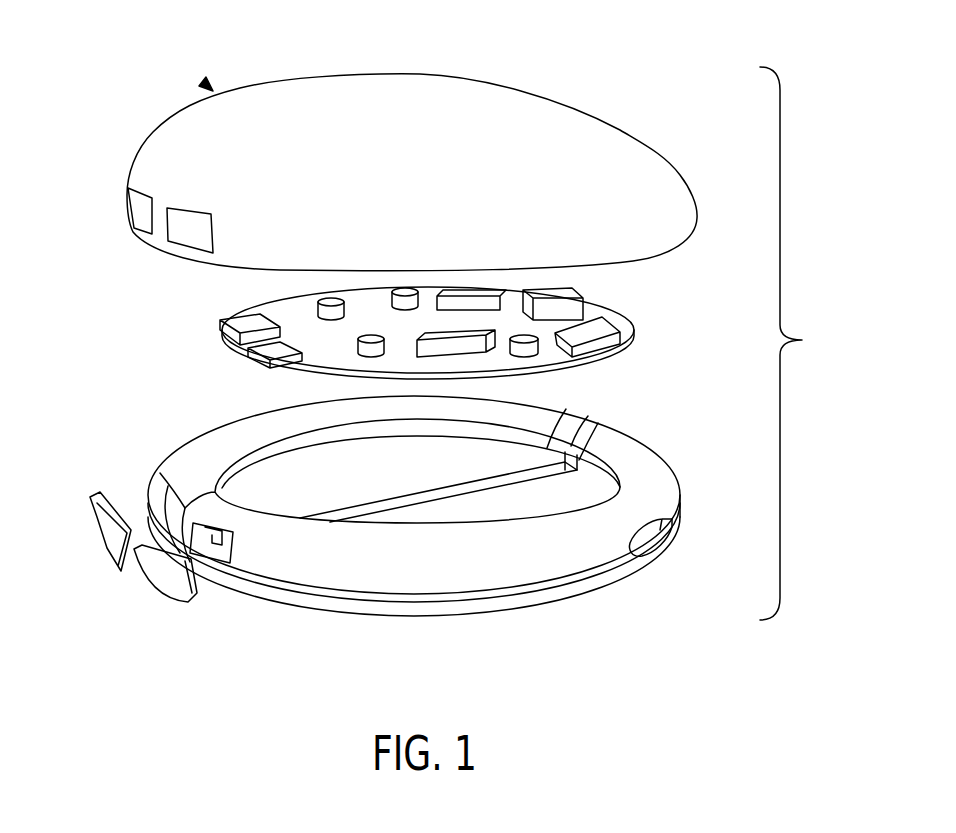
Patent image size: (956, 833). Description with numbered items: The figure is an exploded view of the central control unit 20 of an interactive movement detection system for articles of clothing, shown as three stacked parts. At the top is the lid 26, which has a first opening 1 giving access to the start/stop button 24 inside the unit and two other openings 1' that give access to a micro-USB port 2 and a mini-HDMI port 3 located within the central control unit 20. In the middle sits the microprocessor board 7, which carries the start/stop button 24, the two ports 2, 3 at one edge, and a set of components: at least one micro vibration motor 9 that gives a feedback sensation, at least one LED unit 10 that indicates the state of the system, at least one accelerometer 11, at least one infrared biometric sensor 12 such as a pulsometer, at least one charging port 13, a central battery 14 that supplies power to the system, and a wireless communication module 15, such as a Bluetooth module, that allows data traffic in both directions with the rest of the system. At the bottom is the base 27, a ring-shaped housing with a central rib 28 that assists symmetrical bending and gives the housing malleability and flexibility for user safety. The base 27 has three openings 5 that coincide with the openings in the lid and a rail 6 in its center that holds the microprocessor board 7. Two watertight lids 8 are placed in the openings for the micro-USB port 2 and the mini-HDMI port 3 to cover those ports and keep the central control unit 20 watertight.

The first opening 1 is at (414, 172).
The openings 1' is at (148, 227).
The micro-Universal Serial Bus (USB) port 2 is at (228, 327).
The mini-High Definition Multimedia Interface (HDMI) port 3 is at (256, 356).
The openings 5 is at (200, 532).
The rail 6 is at (560, 414).
The microprocessor board 7 is at (618, 319).
The watertight lids 8 is at (100, 540).
The micro vibration motor 9 is at (320, 307).
The LED unit 10 is at (532, 350).
The accelerometer 11 is at (404, 289).
The infrared biometric sensor 12 is at (362, 348).
The charging port 13 is at (420, 338).
The central battery 14 is at (455, 334).
The wireless communication module 15 is at (555, 300).
The central control unit 20 is at (795, 343).
The start/stop button 24 is at (605, 336).
The lid 26 is at (206, 85).
The base 27 is at (288, 608).
The central rib 28 is at (447, 496).